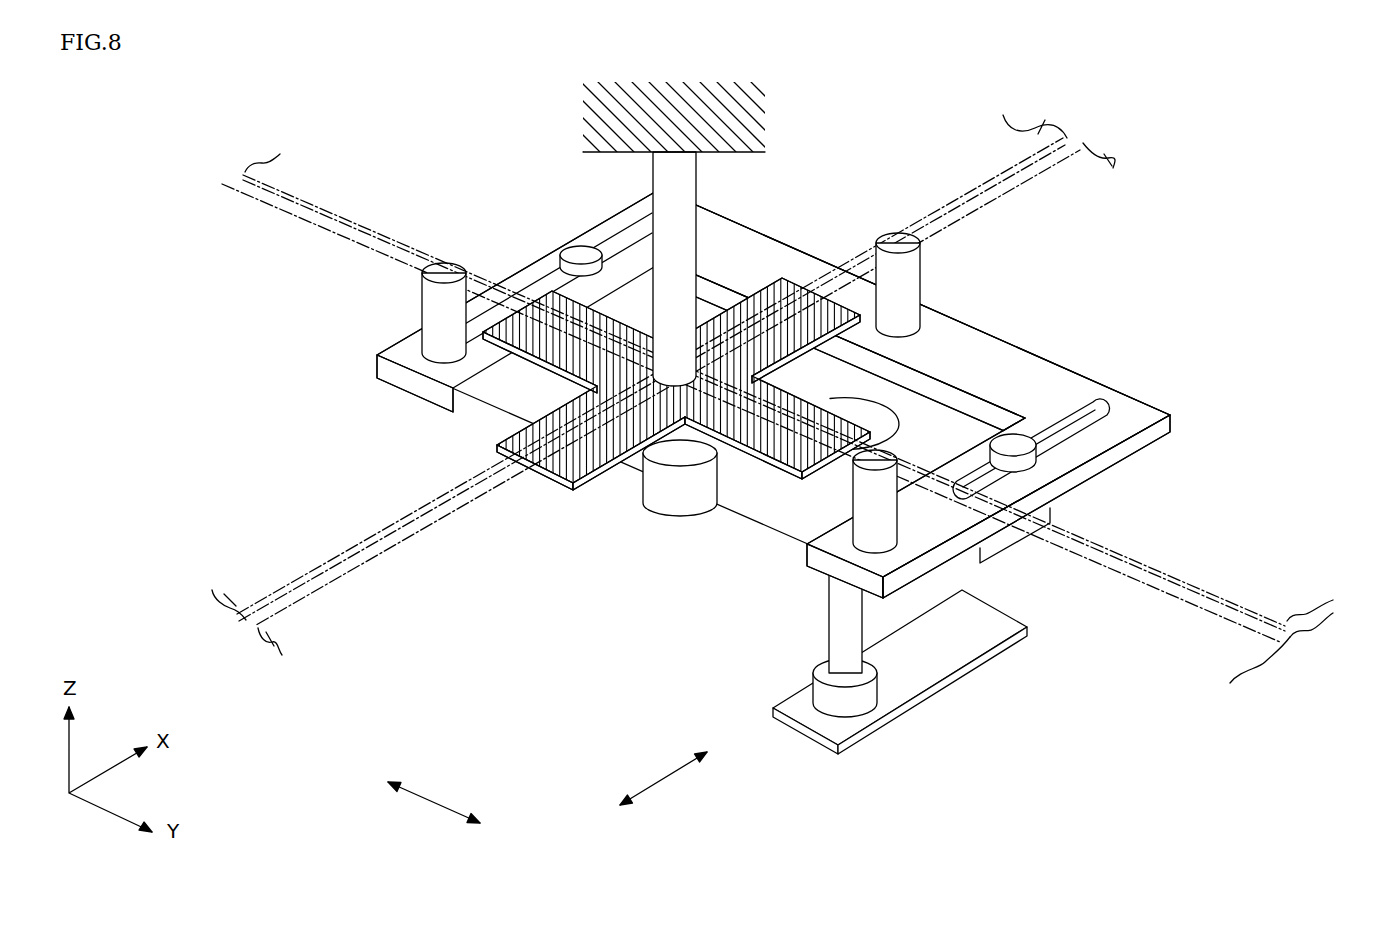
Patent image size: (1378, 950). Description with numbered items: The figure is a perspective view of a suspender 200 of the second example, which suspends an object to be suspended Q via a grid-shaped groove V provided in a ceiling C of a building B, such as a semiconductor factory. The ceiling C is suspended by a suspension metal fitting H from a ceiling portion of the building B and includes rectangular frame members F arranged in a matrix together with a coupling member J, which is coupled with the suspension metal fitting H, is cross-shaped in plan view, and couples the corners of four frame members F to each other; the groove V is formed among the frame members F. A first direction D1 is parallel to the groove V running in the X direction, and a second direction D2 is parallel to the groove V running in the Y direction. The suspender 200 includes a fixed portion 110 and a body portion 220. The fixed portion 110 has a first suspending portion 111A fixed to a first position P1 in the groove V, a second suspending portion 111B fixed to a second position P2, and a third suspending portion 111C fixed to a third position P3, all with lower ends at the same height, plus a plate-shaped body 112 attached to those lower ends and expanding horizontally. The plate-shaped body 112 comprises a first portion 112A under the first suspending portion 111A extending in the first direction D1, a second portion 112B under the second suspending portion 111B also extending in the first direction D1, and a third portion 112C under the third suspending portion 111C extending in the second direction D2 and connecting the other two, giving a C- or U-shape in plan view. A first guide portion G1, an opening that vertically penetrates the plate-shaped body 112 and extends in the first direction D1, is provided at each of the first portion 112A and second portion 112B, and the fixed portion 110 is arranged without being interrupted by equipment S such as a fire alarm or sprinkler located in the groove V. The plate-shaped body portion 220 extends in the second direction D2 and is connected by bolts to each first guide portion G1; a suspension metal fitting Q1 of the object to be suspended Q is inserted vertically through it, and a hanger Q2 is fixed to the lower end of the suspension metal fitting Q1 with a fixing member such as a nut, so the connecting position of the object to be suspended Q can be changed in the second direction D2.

The fixed portion 110 is at (1030, 308).
The plate-shaped body 112 is at (1180, 410).
The first portion 112A is at (405, 356).
The second portion 112B is at (926, 543).
The third portion 112C is at (1023, 362).
The first suspending portion 111A is at (458, 270).
The second suspending portion 111B is at (870, 500).
The third suspending portion 111C is at (893, 236).
The body portion 220 is at (998, 548).
The suspender 200 is at (540, 653).
The building B is at (755, 135).
The suspension metal fitting H is at (688, 181).
The first guide portion G1 is at (598, 250).
The coupling member J is at (569, 488).
The equipment S is at (666, 492).
The first position P1 is at (410, 318).
The second position P2 is at (838, 513).
The third position P3 is at (932, 271).
The object to be suspended Q is at (850, 768).
The suspension metal fitting Q1 is at (838, 633).
The hanger Q2 is at (806, 726).
The grid-shaped groove V is at (253, 193).
The frame member F is at (654, 370).
The ceiling C is at (1273, 688).
The first direction D1 is at (663, 782).
The second direction D2 is at (434, 811).